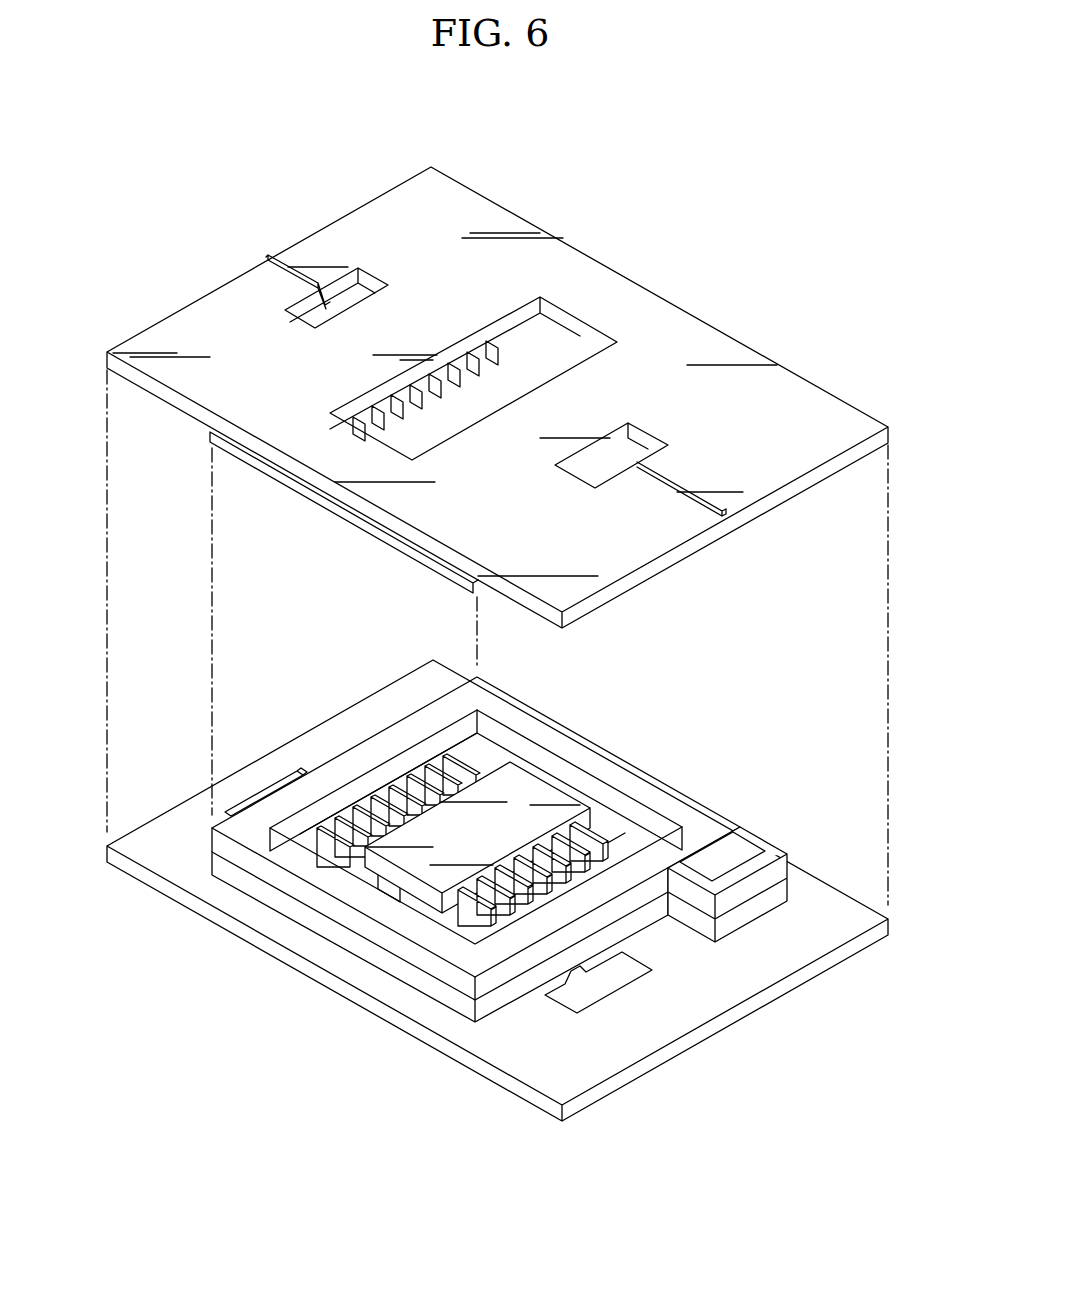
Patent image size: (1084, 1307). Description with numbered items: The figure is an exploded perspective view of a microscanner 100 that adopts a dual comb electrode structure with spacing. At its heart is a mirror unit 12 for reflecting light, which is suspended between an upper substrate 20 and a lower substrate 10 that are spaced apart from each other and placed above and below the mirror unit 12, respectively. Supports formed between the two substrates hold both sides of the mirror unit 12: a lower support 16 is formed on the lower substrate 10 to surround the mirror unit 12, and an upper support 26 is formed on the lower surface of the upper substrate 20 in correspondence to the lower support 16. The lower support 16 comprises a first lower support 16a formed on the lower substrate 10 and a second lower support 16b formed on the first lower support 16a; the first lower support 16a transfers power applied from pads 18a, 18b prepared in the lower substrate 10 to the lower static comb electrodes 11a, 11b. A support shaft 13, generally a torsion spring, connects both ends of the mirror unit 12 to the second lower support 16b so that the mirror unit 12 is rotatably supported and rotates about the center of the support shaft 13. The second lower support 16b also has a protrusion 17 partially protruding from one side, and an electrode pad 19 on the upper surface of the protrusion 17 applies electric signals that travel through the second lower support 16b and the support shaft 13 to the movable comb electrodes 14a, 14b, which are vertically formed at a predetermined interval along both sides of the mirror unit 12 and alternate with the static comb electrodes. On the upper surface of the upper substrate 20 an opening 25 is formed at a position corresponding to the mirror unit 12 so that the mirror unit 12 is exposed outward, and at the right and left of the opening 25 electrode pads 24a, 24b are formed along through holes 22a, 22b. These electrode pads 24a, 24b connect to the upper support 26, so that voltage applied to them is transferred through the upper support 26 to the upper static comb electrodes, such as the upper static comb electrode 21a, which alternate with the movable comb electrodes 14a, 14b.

The microscanner 100 is at (364, 1131).
The lower substrate 10 is at (607, 1092).
The lower static comb electrode 11a is at (357, 835).
The lower static comb electrode 11b is at (387, 888).
The mirror unit 12 is at (535, 795).
The support shaft 13 is at (330, 898).
The movable comb electrode 14a is at (332, 848).
The movable comb electrode 14b is at (348, 903).
The lower support 16 is at (545, 732).
The first lower support 16a is at (737, 920).
The second lower support 16b is at (740, 888).
The protrusion 17 is at (740, 833).
The pad 18a is at (275, 788).
The pad 18b is at (582, 998).
The electrode pad 19 is at (747, 853).
The upper substrate 20 is at (702, 542).
The upper static comb electrode 21a is at (477, 358).
The through hole 22a is at (360, 297).
The through hole 22b is at (640, 445).
The electrode pad 24a is at (282, 273).
The electrode pad 24b is at (677, 482).
The opening 25 is at (565, 340).
The upper support 26 is at (257, 455).